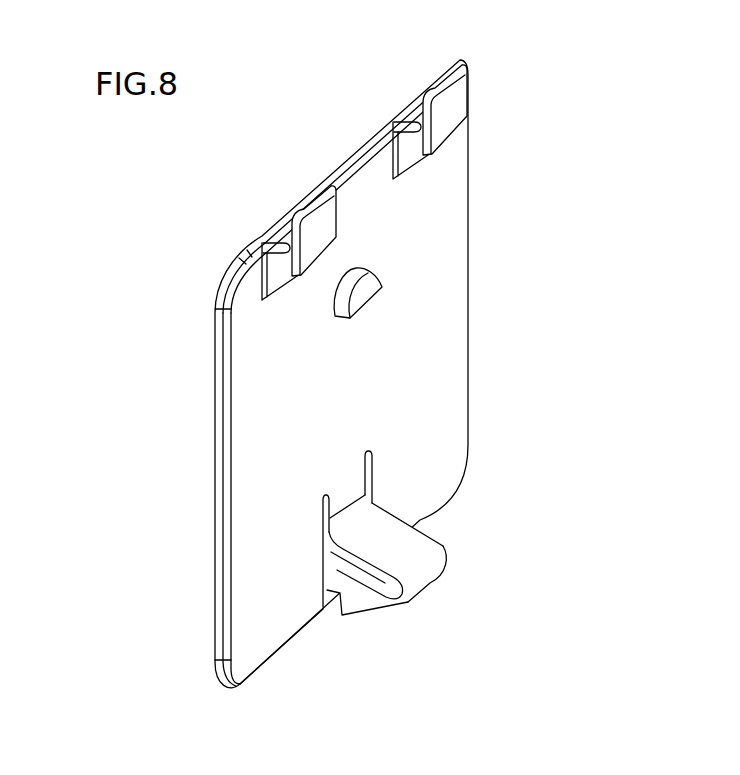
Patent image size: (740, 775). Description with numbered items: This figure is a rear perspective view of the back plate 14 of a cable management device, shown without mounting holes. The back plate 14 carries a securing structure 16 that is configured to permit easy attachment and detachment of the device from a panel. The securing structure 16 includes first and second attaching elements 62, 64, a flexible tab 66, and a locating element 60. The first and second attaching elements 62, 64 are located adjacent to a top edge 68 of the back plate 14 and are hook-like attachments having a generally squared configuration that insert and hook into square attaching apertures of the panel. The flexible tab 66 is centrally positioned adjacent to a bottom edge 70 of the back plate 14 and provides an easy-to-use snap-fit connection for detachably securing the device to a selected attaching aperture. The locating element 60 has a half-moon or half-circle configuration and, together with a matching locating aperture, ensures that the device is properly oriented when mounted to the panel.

The back plate 14 is at (156, 196).
The securing structure 16 is at (390, 81).
The locating element 60 is at (363, 293).
The first attaching element 62 is at (452, 66).
The second attaching element 64 is at (308, 198).
The flexible tab 66 is at (430, 565).
The top edge 68 is at (258, 239).
The bottom edge 70 is at (297, 635).